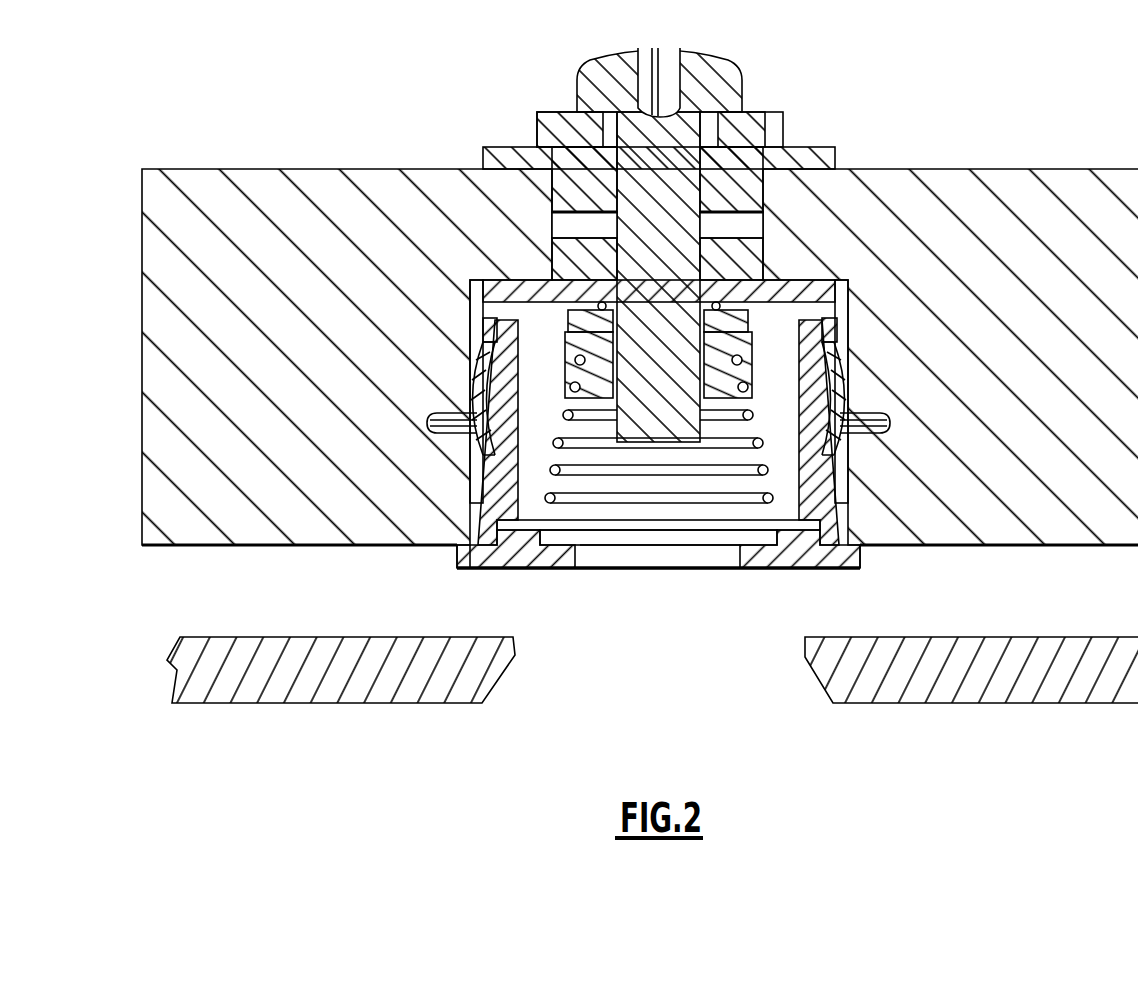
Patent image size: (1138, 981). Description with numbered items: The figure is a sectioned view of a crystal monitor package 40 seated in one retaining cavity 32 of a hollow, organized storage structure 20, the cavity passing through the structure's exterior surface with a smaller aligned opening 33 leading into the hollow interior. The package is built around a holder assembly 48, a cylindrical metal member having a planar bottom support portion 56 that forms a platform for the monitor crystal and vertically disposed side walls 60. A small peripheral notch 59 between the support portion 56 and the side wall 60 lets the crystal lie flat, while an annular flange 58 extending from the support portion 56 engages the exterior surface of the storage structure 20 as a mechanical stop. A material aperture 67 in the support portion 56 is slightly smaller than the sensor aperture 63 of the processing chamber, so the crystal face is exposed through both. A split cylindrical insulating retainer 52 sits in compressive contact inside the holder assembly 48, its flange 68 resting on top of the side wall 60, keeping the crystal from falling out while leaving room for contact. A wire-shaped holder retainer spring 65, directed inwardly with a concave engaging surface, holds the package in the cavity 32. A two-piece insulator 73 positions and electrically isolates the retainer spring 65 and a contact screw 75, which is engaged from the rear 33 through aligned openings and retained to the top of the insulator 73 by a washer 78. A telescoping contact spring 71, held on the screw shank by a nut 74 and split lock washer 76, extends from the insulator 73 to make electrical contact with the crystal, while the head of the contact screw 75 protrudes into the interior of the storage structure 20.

The storage structure 20 is at (213, 169).
The contact screw 75 is at (607, 52).
The washer 78 is at (549, 112).
The opening 33 is at (767, 112).
The insulator 73 is at (555, 253).
The side wall 60 is at (485, 517).
The flange 68 is at (490, 326).
The holder retainer spring 65 is at (478, 386).
The holder assembly 48 is at (497, 470).
The insulating retainer 52 is at (518, 498).
The peripheral notch 59 is at (513, 568).
The material aperture 67 is at (738, 562).
The support portion 56 is at (489, 568).
The annular flange 58 is at (456, 552).
The retaining cavity 32 is at (471, 570).
The split lock washer 76 is at (590, 312).
The nut 74 is at (575, 345).
The contact spring 71 is at (630, 498).
The crystal monitor package 40 is at (560, 594).
The material aperture 63 is at (785, 698).